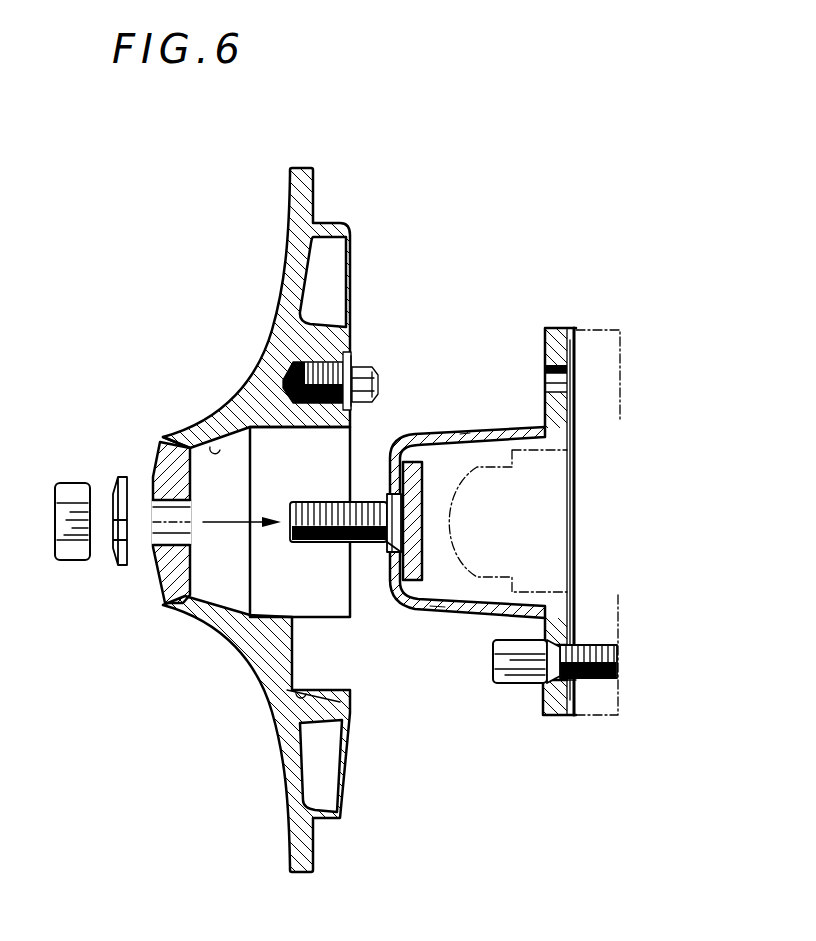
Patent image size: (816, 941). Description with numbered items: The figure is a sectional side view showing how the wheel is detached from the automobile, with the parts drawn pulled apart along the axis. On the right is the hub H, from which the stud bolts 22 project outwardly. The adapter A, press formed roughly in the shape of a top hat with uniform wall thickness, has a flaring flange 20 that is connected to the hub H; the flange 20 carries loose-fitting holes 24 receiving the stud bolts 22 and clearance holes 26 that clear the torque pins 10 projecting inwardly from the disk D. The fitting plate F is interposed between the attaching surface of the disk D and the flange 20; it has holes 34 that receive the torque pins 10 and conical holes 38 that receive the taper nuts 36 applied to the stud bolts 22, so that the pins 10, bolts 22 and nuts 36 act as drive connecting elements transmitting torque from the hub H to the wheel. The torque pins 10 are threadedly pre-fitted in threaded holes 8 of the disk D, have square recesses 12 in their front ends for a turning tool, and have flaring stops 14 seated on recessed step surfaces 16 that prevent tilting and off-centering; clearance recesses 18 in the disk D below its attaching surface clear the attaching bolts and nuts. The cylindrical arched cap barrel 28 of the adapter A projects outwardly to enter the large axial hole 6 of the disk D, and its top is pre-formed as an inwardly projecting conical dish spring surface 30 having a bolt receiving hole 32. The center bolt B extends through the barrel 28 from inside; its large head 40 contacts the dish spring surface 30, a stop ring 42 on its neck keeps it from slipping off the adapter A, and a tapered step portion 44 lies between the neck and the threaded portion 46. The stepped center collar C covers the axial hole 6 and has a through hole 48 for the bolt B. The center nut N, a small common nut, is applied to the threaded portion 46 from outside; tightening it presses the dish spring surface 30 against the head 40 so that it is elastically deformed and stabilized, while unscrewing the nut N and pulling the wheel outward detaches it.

The axial hole 6 is at (202, 442).
The threaded holes 8 is at (287, 380).
The torque pins 10 is at (368, 370).
The square recesses 12 is at (380, 383).
The stops 14 is at (352, 408).
The recessed step surfaces 16 is at (355, 352).
The clearance recesses 18 is at (290, 692).
The flaring flange 20 is at (573, 347).
The stud bolts 22 is at (613, 643).
The loose-fitting holes 24 is at (582, 642).
The clearance holes 26 is at (578, 381).
The cap barrel 28 is at (472, 428).
The dish spring surface 30 is at (440, 562).
The bolt receiving hole 32 is at (428, 530).
The holes 34 is at (567, 377).
The taper nuts 36 is at (498, 684).
The conical holes 38 is at (533, 691).
The head 40 is at (421, 493).
The stop ring 42 is at (388, 493).
The step portion 44 is at (378, 548).
The threaded portion 46 is at (302, 500).
The through hole 48 is at (197, 543).
The adapter A is at (438, 611).
The center bolt B is at (322, 544).
The center collar C is at (163, 574).
The disk D is at (297, 223).
The fitting plate F is at (545, 340).
The hub H is at (603, 718).
The center nut N is at (72, 558).